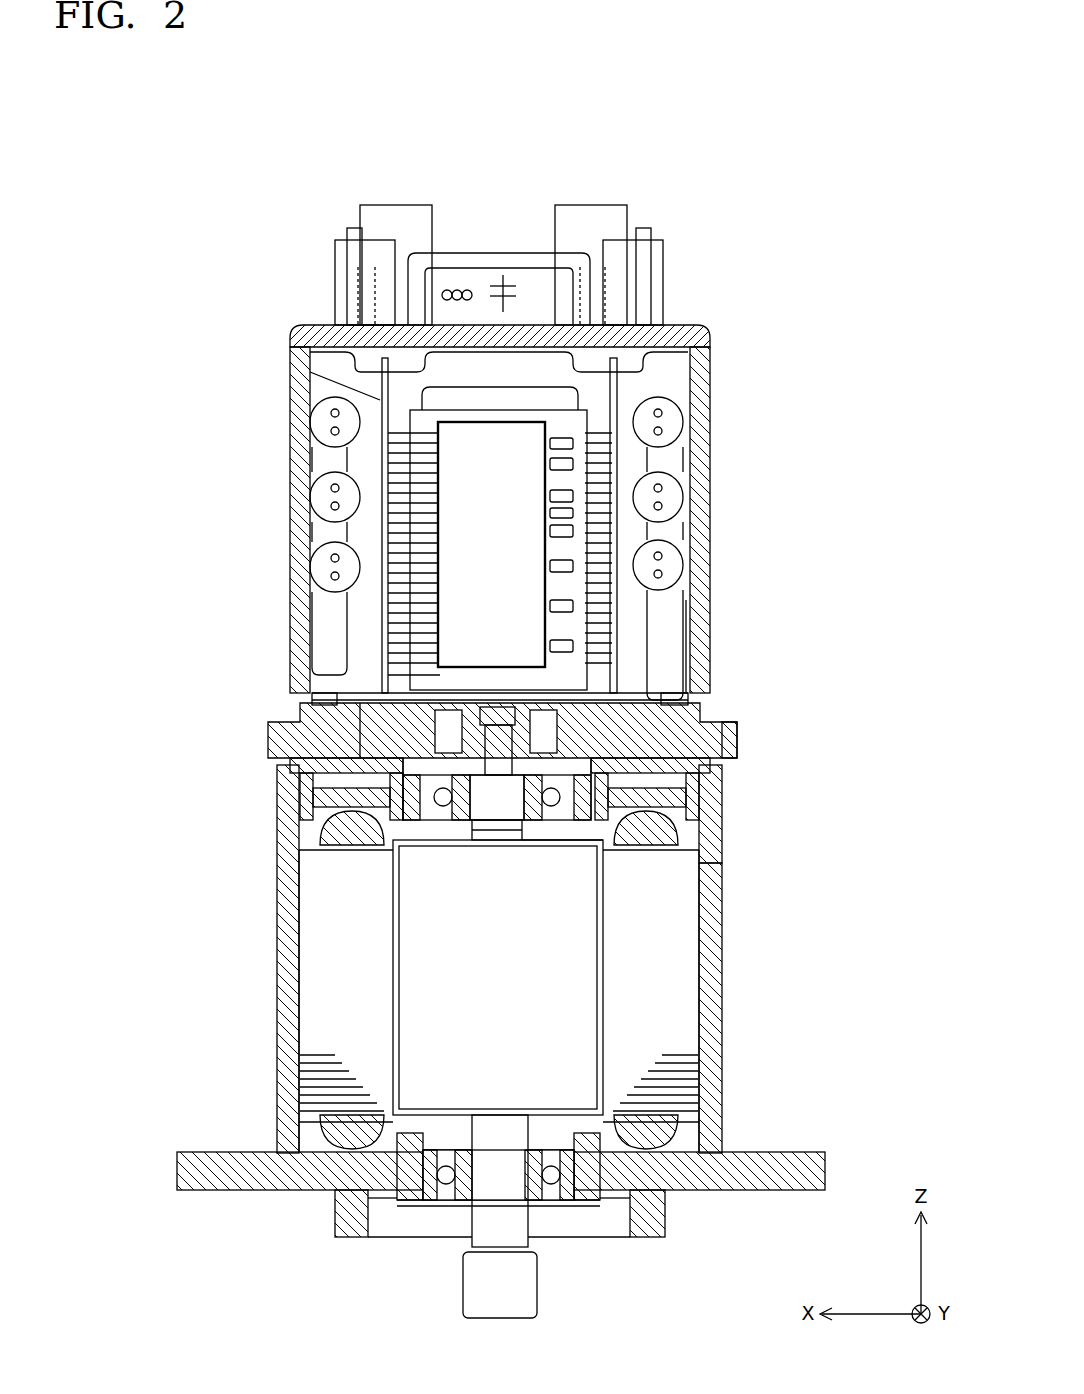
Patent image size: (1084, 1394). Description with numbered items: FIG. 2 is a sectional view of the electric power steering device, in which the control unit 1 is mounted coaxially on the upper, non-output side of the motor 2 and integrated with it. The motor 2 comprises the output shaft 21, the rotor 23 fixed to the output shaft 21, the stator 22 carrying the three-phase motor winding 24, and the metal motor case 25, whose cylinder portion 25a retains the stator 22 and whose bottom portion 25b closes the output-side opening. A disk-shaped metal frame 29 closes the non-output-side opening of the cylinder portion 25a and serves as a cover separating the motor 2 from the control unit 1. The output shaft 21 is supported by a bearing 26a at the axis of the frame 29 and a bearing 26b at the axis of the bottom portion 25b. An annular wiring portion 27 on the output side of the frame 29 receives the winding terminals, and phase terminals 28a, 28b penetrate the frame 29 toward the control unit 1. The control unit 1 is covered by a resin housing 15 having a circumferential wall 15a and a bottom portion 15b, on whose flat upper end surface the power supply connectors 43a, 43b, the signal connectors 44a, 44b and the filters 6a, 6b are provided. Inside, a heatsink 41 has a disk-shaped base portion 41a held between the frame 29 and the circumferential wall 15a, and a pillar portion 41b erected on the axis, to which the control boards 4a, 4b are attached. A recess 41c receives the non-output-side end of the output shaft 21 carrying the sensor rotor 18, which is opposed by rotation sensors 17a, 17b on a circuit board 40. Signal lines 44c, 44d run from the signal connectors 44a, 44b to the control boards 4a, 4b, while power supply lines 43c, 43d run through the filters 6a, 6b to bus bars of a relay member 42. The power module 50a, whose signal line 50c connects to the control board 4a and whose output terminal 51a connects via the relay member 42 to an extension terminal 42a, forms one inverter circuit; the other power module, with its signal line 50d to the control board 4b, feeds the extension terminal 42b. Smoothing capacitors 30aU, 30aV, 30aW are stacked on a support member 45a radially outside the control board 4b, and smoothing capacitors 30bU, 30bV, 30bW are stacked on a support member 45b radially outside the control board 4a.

The control unit 1 is at (712, 338).
The motor 2 is at (722, 1062).
The control board 4a is at (312, 400).
The control board 4b is at (708, 353).
The filter 6a is at (513, 256).
The filter 6b is at (499, 296).
The housing 15 is at (690, 692).
The circumferential wall 15a is at (690, 655).
The bottom portion 15b is at (322, 325).
The rotation sensor 17a is at (482, 842).
The rotation sensor 17b is at (481, 877).
The sensor rotor 18 is at (507, 842).
The output shaft 21 is at (530, 1218).
The stator 22 is at (690, 1023).
The rotor 23 is at (393, 955).
The motor winding 24 is at (722, 875).
The motor case 25 is at (280, 1066).
The cylinder portion 25a is at (278, 1027).
The bottom portion 25b is at (317, 1190).
The bearing 26a is at (345, 898).
The bearing 26b is at (448, 1199).
The annular wiring portion 27 is at (300, 808).
The phase terminal 28a is at (732, 730).
The phase terminal 28b is at (268, 737).
The frame 29 is at (722, 815).
The smoothing capacitor 30aU is at (690, 418).
The smoothing capacitor 30aV is at (690, 493).
The smoothing capacitor 30aW is at (690, 570).
The smoothing capacitor 30bU is at (315, 408).
The smoothing capacitor 30bV is at (312, 490).
The smoothing capacitor 30bW is at (312, 574).
The circuit board 40 is at (335, 690).
The heatsink 41 is at (392, 402).
The base portion 41a is at (278, 757).
The pillar portion 41b is at (385, 676).
The recess 41c is at (583, 842).
The relay member 42 is at (478, 380).
The extension terminal 42a is at (700, 633).
The extension terminal 42b is at (290, 704).
The power supply connector 43a is at (622, 208).
The power supply connector 43b is at (405, 205).
The power supply line 43c is at (430, 325).
The power supply line 43d is at (645, 325).
The signal connector 44a is at (335, 247).
The signal connector 44b is at (663, 247).
The signal line 44c is at (322, 340).
The signal line 44d is at (708, 332).
The support member 45a is at (697, 598).
The support member 45b is at (320, 598).
The power module 50a is at (318, 555).
The signal line 50c is at (318, 432).
The signal line 50d is at (690, 458).
The output terminal 51a is at (640, 557).